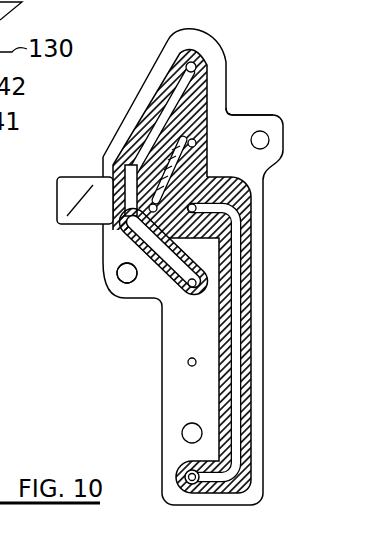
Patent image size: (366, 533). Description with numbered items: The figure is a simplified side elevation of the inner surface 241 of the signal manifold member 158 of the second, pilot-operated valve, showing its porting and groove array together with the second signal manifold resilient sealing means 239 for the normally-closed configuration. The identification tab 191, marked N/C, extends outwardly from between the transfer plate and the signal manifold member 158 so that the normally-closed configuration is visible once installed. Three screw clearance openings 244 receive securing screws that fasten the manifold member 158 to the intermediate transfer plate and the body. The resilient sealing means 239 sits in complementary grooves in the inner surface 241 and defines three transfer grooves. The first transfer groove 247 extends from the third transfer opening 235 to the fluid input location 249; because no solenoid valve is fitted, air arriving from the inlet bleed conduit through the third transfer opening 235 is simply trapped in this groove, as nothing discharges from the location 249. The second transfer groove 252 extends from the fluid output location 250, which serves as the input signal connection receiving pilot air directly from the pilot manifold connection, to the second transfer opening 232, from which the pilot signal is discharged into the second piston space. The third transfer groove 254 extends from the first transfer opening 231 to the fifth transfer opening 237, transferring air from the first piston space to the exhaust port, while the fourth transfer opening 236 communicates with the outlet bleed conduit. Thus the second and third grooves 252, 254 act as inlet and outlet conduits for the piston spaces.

The signal manifold member 158 is at (247, 63).
The identification tab 191 is at (57, 197).
The first transfer opening 231 is at (195, 297).
The second transfer opening 232 is at (233, 115).
The third transfer opening 235 is at (191, 477).
The fourth transfer opening 236 is at (189, 362).
The fifth transfer opening 237 is at (190, 62).
The second signal manifold resilient sealing means 239 is at (128, 249).
The inner surface 241 is at (199, 388).
The screw clearance openings 244 is at (261, 140).
The first transfer groove 247 is at (247, 322).
The fluid input location 249 is at (240, 214).
The fluid output location 250 is at (133, 212).
The second transfer groove 252 is at (177, 163).
The third transfer groove 254 is at (143, 138).